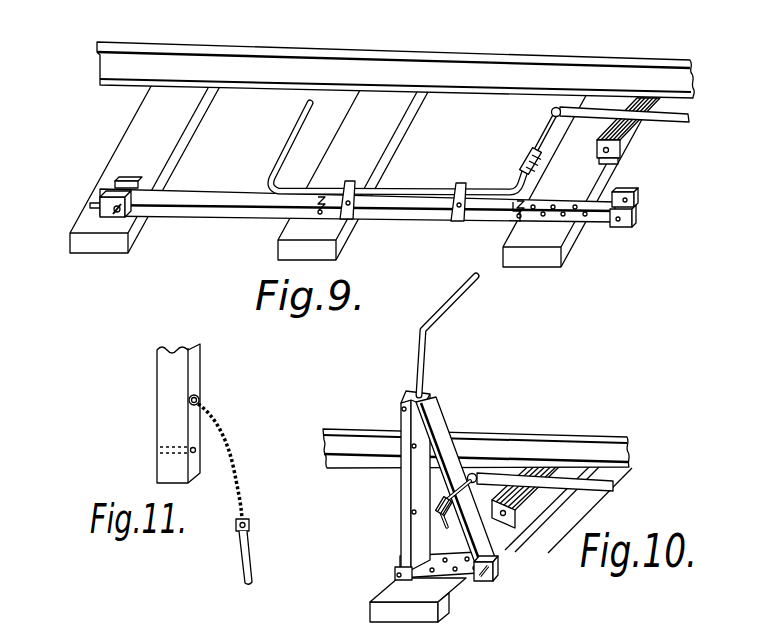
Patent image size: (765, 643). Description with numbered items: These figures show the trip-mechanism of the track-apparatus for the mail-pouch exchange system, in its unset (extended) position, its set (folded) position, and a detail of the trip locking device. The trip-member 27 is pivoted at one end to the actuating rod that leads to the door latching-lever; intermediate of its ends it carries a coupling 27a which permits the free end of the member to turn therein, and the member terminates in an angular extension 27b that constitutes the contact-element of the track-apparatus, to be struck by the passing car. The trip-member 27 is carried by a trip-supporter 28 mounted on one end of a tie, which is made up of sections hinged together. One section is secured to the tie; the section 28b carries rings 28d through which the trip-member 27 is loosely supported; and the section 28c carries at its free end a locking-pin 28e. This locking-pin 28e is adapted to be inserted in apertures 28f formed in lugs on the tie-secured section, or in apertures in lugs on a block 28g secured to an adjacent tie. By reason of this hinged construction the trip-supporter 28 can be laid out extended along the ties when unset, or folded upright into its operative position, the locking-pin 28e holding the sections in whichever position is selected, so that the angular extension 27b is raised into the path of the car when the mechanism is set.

In FIG. 9, the trip-member 27 is at (547, 117).
In FIG. 9, the coupling 27a is at (538, 161).
In FIG. 10, the coupling 27a is at (445, 518).
In FIG. 9, the angular extension 27b is at (283, 148).
In FIG. 10, the angular extension 27b is at (453, 302).
In FIG. 10, the trip-supporter 28 is at (405, 573).
In FIG. 10, the section of trip-supporter 28b is at (415, 482).
In FIG. 10, the section of trip-supporter 28c is at (453, 453).
In FIG. 11, the section of trip-supporter 28c is at (197, 392).
In FIG. 9, the rings 28d is at (357, 171).
In FIG. 10, the rings 28d is at (442, 567).
In FIG. 9, the locking-pin 28e is at (117, 213).
In FIG. 10, the locking-pin 28e is at (482, 580).
In FIG. 11, the locking-pin 28e is at (248, 563).
In FIG. 9, the apertures 28f is at (636, 213).
In FIG. 10, the apertures 28f is at (485, 578).
In FIG. 9, the block 28g is at (100, 202).